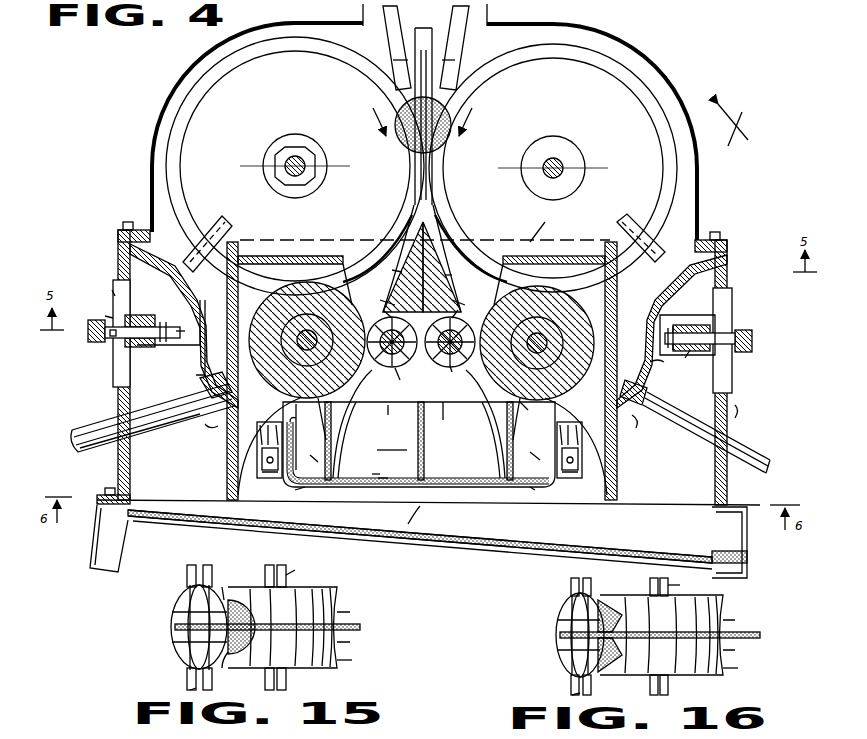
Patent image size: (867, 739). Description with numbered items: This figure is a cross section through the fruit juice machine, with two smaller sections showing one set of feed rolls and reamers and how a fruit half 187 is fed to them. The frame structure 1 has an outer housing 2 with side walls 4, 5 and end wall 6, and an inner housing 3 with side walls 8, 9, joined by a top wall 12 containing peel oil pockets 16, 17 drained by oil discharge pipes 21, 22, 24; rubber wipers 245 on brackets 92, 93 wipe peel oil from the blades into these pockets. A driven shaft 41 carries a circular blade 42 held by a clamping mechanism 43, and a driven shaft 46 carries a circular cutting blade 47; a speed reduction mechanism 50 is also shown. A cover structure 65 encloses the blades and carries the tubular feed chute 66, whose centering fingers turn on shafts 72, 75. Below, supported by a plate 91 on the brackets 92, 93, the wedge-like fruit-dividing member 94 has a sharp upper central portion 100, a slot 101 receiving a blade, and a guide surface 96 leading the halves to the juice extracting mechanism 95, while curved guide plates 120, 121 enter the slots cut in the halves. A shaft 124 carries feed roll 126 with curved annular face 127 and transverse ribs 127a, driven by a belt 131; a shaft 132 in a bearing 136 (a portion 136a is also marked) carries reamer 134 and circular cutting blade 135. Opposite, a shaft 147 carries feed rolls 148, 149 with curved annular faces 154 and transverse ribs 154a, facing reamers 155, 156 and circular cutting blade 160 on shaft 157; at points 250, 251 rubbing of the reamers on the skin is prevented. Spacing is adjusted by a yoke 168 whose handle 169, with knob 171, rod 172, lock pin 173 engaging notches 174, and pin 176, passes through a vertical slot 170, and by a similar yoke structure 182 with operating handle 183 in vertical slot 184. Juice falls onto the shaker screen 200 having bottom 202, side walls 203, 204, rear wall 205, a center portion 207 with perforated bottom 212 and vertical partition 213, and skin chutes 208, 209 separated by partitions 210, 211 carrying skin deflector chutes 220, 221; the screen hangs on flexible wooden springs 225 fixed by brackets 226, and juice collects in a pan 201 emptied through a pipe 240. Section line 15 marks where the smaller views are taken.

In FIG. 4, the frame structure 1 is at (92, 532).
In FIG. 4, the outer housing 2 is at (742, 409).
In FIG. 4, the inner housing 3 is at (634, 407).
In FIG. 4, the side wall 4 is at (118, 460).
In FIG. 4, the side wall 5 is at (736, 467).
In FIG. 4, the end wall 6 is at (160, 460).
In FIG. 4, the side wall 8 is at (214, 405).
In FIG. 4, the side wall 9 is at (661, 366).
In FIG. 4, the top wall 12 is at (741, 125).
In FIG. 4, the section line 15 is at (538, 225).
In FIG. 4, the pocket 16 is at (165, 244).
In FIG. 4, the pocket 17 is at (668, 252).
In FIG. 4, the oil discharge pipe 21 is at (76, 452).
In FIG. 4, the oil discharge pipe 22 is at (764, 446).
In FIG. 4, the oil discharge pipe 24 is at (86, 430).
In FIG. 4, the driven shaft 41 is at (288, 160).
In FIG. 15, the driven shaft 41 is at (355, 626).
In FIG. 4, the circular blade 42 is at (312, 111).
In FIG. 4, the clamping mechanism 43 is at (268, 180).
In FIG. 4, the driven shaft 46 is at (565, 168).
In FIG. 4, the circular cutting blade 47 is at (597, 113).
In FIG. 16, the circular cutting blade 47 is at (671, 636).
In FIG. 4, the speed reduction mechanism 50 is at (424, 45).
In FIG. 4, the cover structure 65 is at (645, 58).
In FIG. 4, the tubular feed chute 66 is at (495, 16).
In FIG. 4, the shaft 72 is at (450, 54).
In FIG. 4, the shaft 75 is at (392, 54).
In FIG. 4, the plate 91 is at (439, 416).
In FIG. 4, the bracket 92 is at (262, 412).
In FIG. 4, the bracket 93 is at (598, 412).
In FIG. 4, the fruit-dividing member 94 is at (437, 225).
In FIG. 4, the juice extracting mechanism 95 is at (454, 374).
In FIG. 4, the fruit engaging surface 96 is at (390, 272).
In FIG. 4, the upper central portion 100 is at (440, 210).
In FIG. 4, the slot 101 is at (400, 210).
In FIG. 4, the guide plate 120 is at (378, 292).
In FIG. 4, the guide plate 121 is at (492, 287).
In FIG. 15, the guide plate 121 is at (266, 578).
In FIG. 16, the guide plate 121 is at (640, 592).
In FIG. 4, the shaft 124 is at (300, 330).
In FIG. 4, the feed roll 126 is at (301, 437).
In FIG. 4, the curved annular face 127 is at (323, 419).
In FIG. 4, the transverse ribs 127a is at (356, 424).
In FIG. 4, the belt 131 is at (460, 274).
In FIG. 4, the shaft 132 is at (403, 383).
In FIG. 4, the reamer 134 is at (392, 362).
In FIG. 4, the circular cutting blade 135 is at (375, 307).
In FIG. 4, the bearing 136 is at (472, 248).
In FIG. 4, the left deflector 136a is at (377, 248).
In FIG. 4, the shaft 147 is at (560, 310).
In FIG. 15, the shaft 147 is at (286, 570).
In FIG. 16, the shaft 147 is at (685, 578).
In FIG. 15, the feed roll 148 is at (338, 596).
In FIG. 16, the feed roll 148 is at (724, 602).
In FIG. 4, the feed roll 149 is at (529, 409).
In FIG. 15, the feed roll 149 is at (357, 658).
In FIG. 16, the feed roll 149 is at (745, 668).
In FIG. 15, the annular face 154 is at (357, 626).
In FIG. 16, the annular face 154 is at (743, 634).
In FIG. 4, the transverse ribs 154a is at (494, 420).
In FIG. 4, the reamer 155 is at (450, 365).
In FIG. 15, the reamer 155 is at (186, 598).
In FIG. 16, the reamer 155 is at (556, 610).
In FIG. 15, the reamer 156 is at (178, 648).
In FIG. 16, the reamer 156 is at (558, 650).
In FIG. 15, the shaft 157 is at (186, 686).
In FIG. 16, the shaft 157 is at (570, 690).
In FIG. 4, the circular cutting blade 160 is at (468, 307).
In FIG. 15, the circular cutting blade 160 is at (172, 627).
In FIG. 16, the circular cutting blade 160 is at (556, 635).
In FIG. 4, the yoke 168 is at (185, 348).
In FIG. 4, the handle 169 is at (104, 316).
In FIG. 4, the vertical slot 170 is at (130, 370).
In FIG. 4, the knob 171 is at (88, 336).
In FIG. 4, the rod 172 is at (146, 315).
In FIG. 4, the lock pin 173 is at (168, 320).
In FIG. 4, the notches 174 is at (110, 296).
In FIG. 4, the pin 176 is at (191, 321).
In FIG. 4, the yoke structure 182 is at (691, 361).
In FIG. 4, the operating handle 183 is at (756, 346).
In FIG. 4, the vertical slot 184 is at (732, 372).
In FIG. 15, the half of the fruit 187 is at (222, 588).
In FIG. 4, the shaker screen 200 is at (450, 472).
In FIG. 4, the pan 201 is at (472, 542).
In FIG. 4, the bottom 202 is at (378, 474).
In FIG. 4, the side wall 203 is at (308, 452).
In FIG. 4, the side wall 204 is at (529, 449).
In FIG. 4, the rear wall 205 is at (398, 466).
In FIG. 4, the center portion 207 is at (392, 442).
In FIG. 4, the skin chute 208 is at (303, 495).
In FIG. 4, the skin chute 209 is at (536, 495).
In FIG. 4, the partition 210 is at (332, 455).
In FIG. 4, the partition 211 is at (506, 446).
In FIG. 4, the perforated bottom 212 is at (411, 517).
In FIG. 4, the vertical partition 213 is at (424, 440).
In FIG. 4, the skin deflector chute 220 is at (387, 407).
In FIG. 4, the skin deflector chute 221 is at (483, 424).
In FIG. 4, the flexible wooden spring 225 is at (420, 449).
In FIG. 4, the bracket 226 is at (264, 480).
In FIG. 4, the pipe 240 is at (747, 542).
In FIG. 4, the rubber wiper 245 is at (220, 216).
In FIG. 15, the point 250 is at (240, 600).
In FIG. 15, the point 251 is at (222, 668).